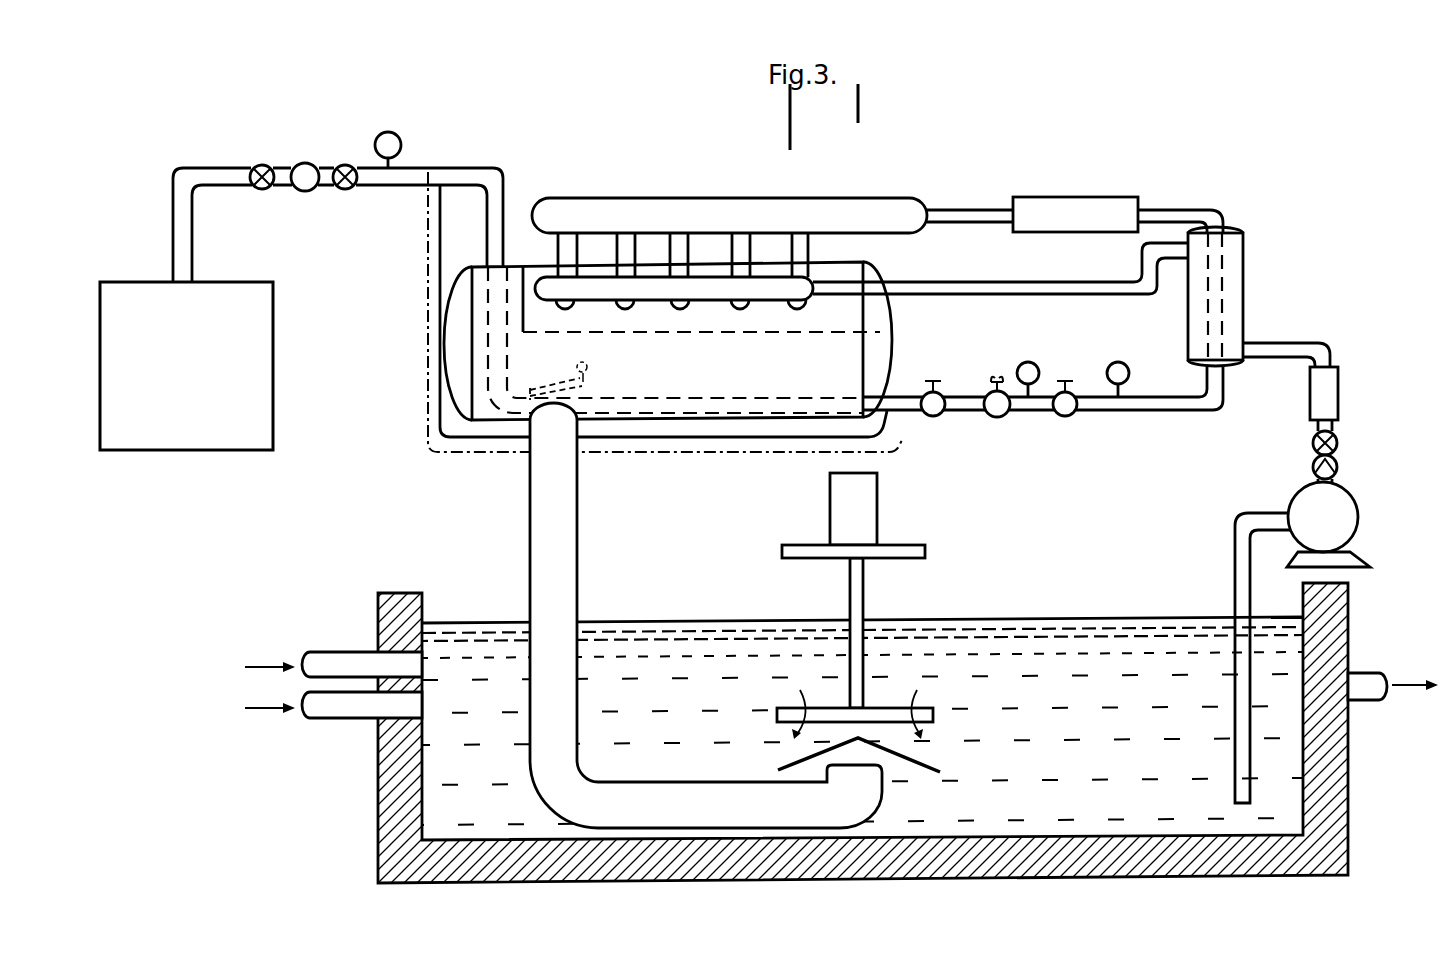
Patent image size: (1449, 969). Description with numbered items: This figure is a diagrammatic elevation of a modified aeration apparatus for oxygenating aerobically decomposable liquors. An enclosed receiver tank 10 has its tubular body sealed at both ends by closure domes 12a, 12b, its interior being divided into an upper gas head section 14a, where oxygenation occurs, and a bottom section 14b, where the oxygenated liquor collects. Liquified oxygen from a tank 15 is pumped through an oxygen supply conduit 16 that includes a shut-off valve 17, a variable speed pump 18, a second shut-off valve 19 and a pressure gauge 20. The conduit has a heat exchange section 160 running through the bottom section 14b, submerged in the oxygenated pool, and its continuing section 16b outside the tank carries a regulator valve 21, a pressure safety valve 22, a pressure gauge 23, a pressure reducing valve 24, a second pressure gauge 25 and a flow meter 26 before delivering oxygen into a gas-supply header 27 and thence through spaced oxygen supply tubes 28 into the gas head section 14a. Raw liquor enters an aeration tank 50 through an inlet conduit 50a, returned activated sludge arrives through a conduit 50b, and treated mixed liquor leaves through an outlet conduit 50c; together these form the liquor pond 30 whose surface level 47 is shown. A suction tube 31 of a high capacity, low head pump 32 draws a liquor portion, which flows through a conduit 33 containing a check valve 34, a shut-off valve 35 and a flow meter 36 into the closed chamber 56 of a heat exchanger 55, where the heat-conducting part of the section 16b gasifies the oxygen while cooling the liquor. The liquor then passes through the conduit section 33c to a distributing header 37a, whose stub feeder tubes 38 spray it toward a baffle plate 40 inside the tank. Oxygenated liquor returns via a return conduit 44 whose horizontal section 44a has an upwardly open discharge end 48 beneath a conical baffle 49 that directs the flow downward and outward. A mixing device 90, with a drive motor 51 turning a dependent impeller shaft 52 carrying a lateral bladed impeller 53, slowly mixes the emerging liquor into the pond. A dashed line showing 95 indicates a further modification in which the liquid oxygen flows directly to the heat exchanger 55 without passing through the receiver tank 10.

The receiver tank 10 is at (446, 305).
The closure dome 12a is at (455, 353).
The closure dome 12b is at (890, 357).
The gas head section 14a is at (852, 323).
The bottom section 14b is at (480, 410).
The tank 15 is at (200, 367).
The oxygen supply conduit 16 is at (178, 229).
The continuing section of the oxygen supply conduit 16b is at (1150, 410).
The shut-off valve 17 is at (266, 165).
The variable speed pump 18 is at (304, 191).
The second shut-off valve 19 is at (346, 165).
The pressure gauge 20 is at (401, 140).
The regulator valve 21 is at (935, 418).
The pressure safety valve 22 is at (997, 418).
The pressure gauge 23 is at (1038, 365).
The pressure reducing valve 24 is at (1065, 418).
The second pressure gauge 25 is at (1122, 367).
The flow meter 26 is at (1096, 197).
The gas-supply header 27 is at (788, 198).
The oxygen supply tubes 28 is at (676, 246).
The liquor pond 30 is at (1128, 729).
The suction tube 31 is at (1235, 563).
The pump 32 is at (1359, 516).
The conduit 33 is at (1330, 344).
The branch line 33c is at (958, 284).
The check valve 34 is at (1338, 468).
The shut-off valve 35 is at (1338, 442).
The flow meter 36 is at (1339, 399).
The raw liquor supply distributing header 37a is at (707, 301).
The stub feeder tubes 38 is at (681, 311).
The baffle plate 40 is at (778, 336).
The return conduit 44 is at (578, 540).
The horizontally disposed section of the return conduit 44a is at (686, 795).
The pond surface level 47 is at (695, 622).
The discharge end 48 is at (871, 790).
The conical baffle 49 is at (940, 762).
The aeration tank 50 is at (378, 799).
The inlet conduit 50a is at (341, 652).
The conduit 50b is at (348, 719).
The outlet conduit 50c is at (1380, 673).
The drive motor 51 is at (877, 506).
The impeller shaft 52 is at (850, 588).
The lateral bladed impeller 53 is at (935, 716).
The heat exchanger 55 is at (1238, 225).
The closed chamber 56 is at (1245, 280).
The mixing device 90 is at (935, 583).
The dashed line showing 95 is at (421, 267).
The heat exchange section 160 is at (678, 396).